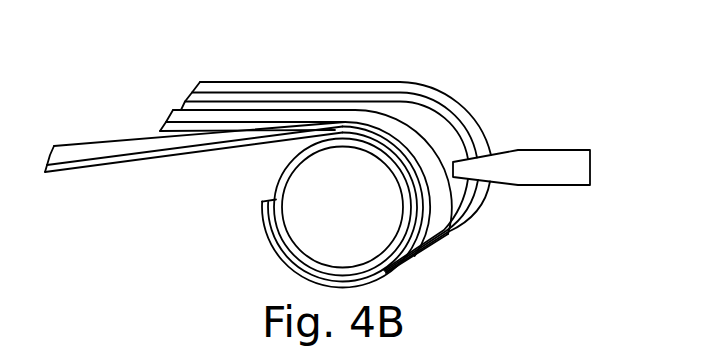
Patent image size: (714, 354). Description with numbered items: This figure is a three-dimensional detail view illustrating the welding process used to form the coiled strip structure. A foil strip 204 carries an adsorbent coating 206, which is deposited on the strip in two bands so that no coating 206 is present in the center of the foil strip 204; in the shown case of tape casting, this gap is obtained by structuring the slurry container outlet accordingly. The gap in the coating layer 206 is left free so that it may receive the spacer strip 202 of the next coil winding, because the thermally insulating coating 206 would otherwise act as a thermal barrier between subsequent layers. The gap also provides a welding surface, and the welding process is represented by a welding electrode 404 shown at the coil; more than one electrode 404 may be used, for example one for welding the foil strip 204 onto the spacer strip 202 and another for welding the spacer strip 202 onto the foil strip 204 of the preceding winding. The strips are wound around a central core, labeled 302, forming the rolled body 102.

The rolled flexible display 102 is at (268, 193).
The spacer strip 202 is at (72, 174).
The foil strip 204 is at (436, 136).
The adsorbent coating 206 is at (197, 83).
The roller core 302 is at (364, 221).
The welding electrode 404 is at (562, 187).